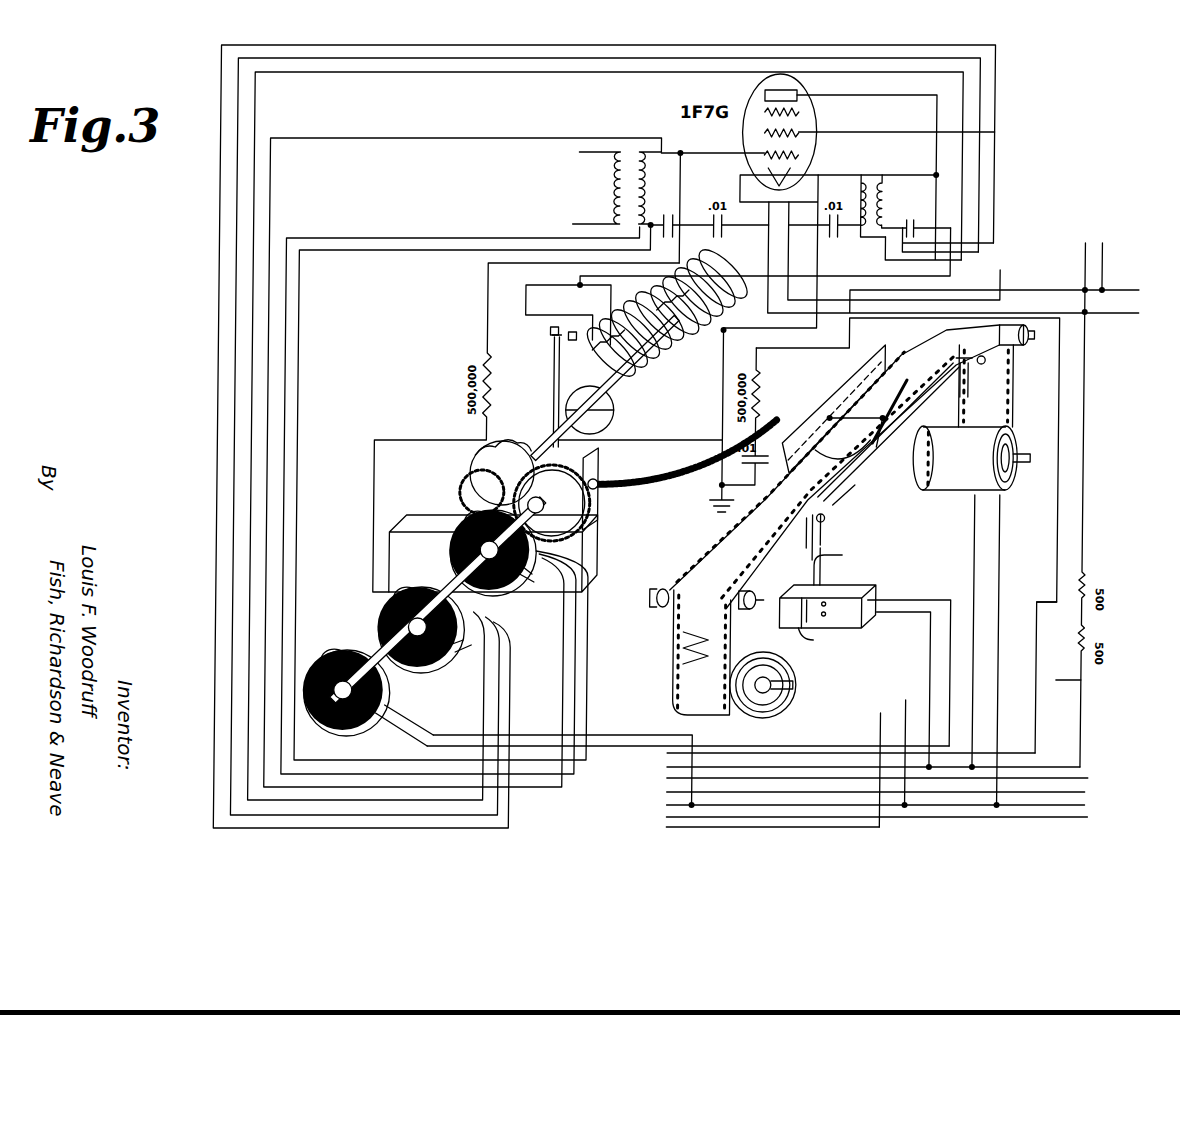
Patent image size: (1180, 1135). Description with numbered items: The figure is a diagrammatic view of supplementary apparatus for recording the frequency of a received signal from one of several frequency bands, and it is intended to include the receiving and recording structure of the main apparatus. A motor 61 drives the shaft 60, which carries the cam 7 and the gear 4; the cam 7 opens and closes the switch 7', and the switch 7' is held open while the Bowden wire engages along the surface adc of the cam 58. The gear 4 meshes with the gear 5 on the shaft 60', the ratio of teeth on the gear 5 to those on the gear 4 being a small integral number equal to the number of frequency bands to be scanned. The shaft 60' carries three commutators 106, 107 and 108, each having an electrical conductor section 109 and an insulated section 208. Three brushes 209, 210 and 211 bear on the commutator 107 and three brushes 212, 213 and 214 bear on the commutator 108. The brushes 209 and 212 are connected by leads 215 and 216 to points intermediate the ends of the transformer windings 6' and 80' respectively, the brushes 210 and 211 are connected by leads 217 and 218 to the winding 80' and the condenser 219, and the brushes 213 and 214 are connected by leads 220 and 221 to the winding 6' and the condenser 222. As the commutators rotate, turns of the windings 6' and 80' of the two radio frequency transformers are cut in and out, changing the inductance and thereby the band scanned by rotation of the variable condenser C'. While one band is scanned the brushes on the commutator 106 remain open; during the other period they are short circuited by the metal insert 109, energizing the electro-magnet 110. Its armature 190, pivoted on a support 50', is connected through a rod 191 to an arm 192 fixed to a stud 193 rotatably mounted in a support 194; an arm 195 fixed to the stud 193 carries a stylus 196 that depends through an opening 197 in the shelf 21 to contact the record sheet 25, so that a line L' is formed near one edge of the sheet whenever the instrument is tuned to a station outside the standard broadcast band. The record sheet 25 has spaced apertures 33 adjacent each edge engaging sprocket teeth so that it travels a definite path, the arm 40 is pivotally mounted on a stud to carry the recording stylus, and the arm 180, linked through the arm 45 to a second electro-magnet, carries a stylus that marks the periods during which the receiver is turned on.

The gear 4 is at (466, 492).
The gear 5 is at (576, 508).
The cam 7 is at (602, 410).
The switch 7' is at (546, 387).
The shelf 21 is at (843, 440).
The record sheet 25 is at (728, 553).
The spaced apertures 33 is at (697, 578).
The arm 40 is at (887, 410).
The arm 45 is at (970, 388).
The support 50' is at (847, 628).
The cam 58 is at (482, 470).
The shaft 60 is at (591, 388).
The shaft 60' is at (446, 666).
The motor 61 is at (420, 513).
The commutator 106 is at (326, 668).
The commutator 107 is at (402, 590).
The commutator 108 is at (462, 552).
The electrical conductor section 109 is at (393, 714).
The electro-magnet 110 is at (858, 583).
The arm 180 is at (978, 357).
The armature 190 is at (850, 562).
The rod 191 is at (813, 622).
The arm 192 is at (828, 548).
The stud 193 is at (828, 520).
The support 194 is at (840, 540).
The arm 195 is at (853, 498).
The stylus 196 is at (872, 454).
The opening 197 is at (876, 462).
The insulated section 208 is at (468, 523).
The brush 209 is at (487, 641).
The brush 210 is at (482, 632).
The brush 211 is at (471, 616).
The brush 212 is at (570, 596).
The brush 213 is at (577, 578).
The brush 214 is at (567, 553).
The lead 215 is at (256, 292).
The lead 216 is at (272, 323).
The lead 217 is at (222, 425).
The lead 218 is at (239, 365).
The condenser 219 is at (920, 236).
The lead 220 is at (327, 238).
The lead 221 is at (331, 251).
The condenser 222 is at (672, 224).
The transformer winding 6' is at (619, 188).
The transformer winding 80' is at (893, 206).
The variable condenser C' is at (667, 317).
The line L' is at (755, 590).